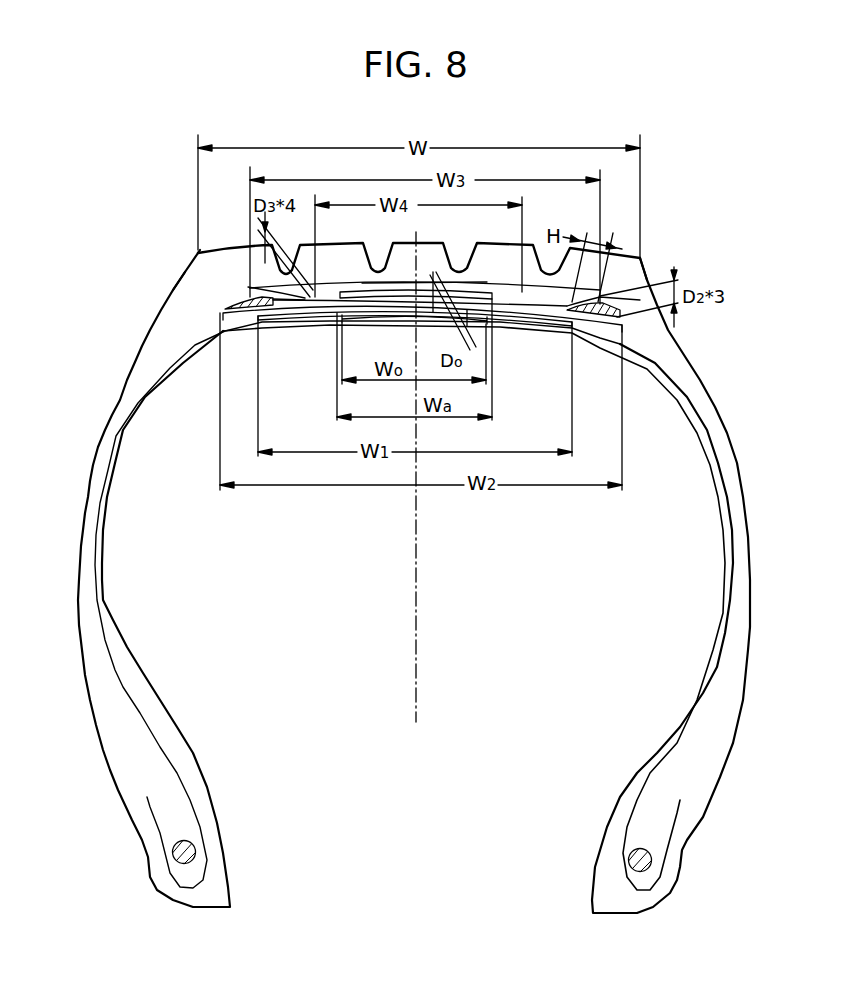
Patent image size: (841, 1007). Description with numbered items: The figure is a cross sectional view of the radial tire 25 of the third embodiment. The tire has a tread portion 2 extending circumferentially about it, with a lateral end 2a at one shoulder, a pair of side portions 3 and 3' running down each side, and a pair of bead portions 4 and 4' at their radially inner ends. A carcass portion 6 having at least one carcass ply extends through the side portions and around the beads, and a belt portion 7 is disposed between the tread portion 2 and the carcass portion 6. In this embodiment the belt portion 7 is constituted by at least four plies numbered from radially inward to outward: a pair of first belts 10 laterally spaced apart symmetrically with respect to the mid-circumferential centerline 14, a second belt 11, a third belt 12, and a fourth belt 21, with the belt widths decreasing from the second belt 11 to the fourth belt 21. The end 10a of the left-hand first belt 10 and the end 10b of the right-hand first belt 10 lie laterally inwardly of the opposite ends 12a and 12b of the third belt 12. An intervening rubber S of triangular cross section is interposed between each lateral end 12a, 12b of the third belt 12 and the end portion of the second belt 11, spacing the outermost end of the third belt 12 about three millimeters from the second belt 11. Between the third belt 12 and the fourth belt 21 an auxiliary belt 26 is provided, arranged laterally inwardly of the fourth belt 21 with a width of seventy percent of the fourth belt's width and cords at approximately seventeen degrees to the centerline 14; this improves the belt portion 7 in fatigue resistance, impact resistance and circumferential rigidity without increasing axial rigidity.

The tread portion 2 is at (478, 250).
The lateral end of tread portion 2a is at (195, 254).
The side portion 3 is at (144, 580).
The side portion 3' is at (681, 585).
The bead portion 4 is at (202, 845).
The bead portion 4' is at (624, 847).
The carcass portion 6 is at (124, 688).
The belt portion 7 is at (194, 292).
The first belt 10 is at (300, 321).
The end of left-hand first belt 10a is at (258, 320).
The end of right-hand first belt 10b is at (583, 330).
The second belt 11 is at (390, 318).
The third belt 12 is at (297, 295).
The lateral end of third belt 12a is at (248, 287).
The lateral end of third belt 12b is at (600, 297).
The mid-circumferential centerline 14 is at (420, 243).
The fourth belt 21 is at (486, 281).
The radial tire 25 is at (682, 239).
The auxiliary belt 26 is at (363, 284).
The intervening rubber S is at (225, 308).